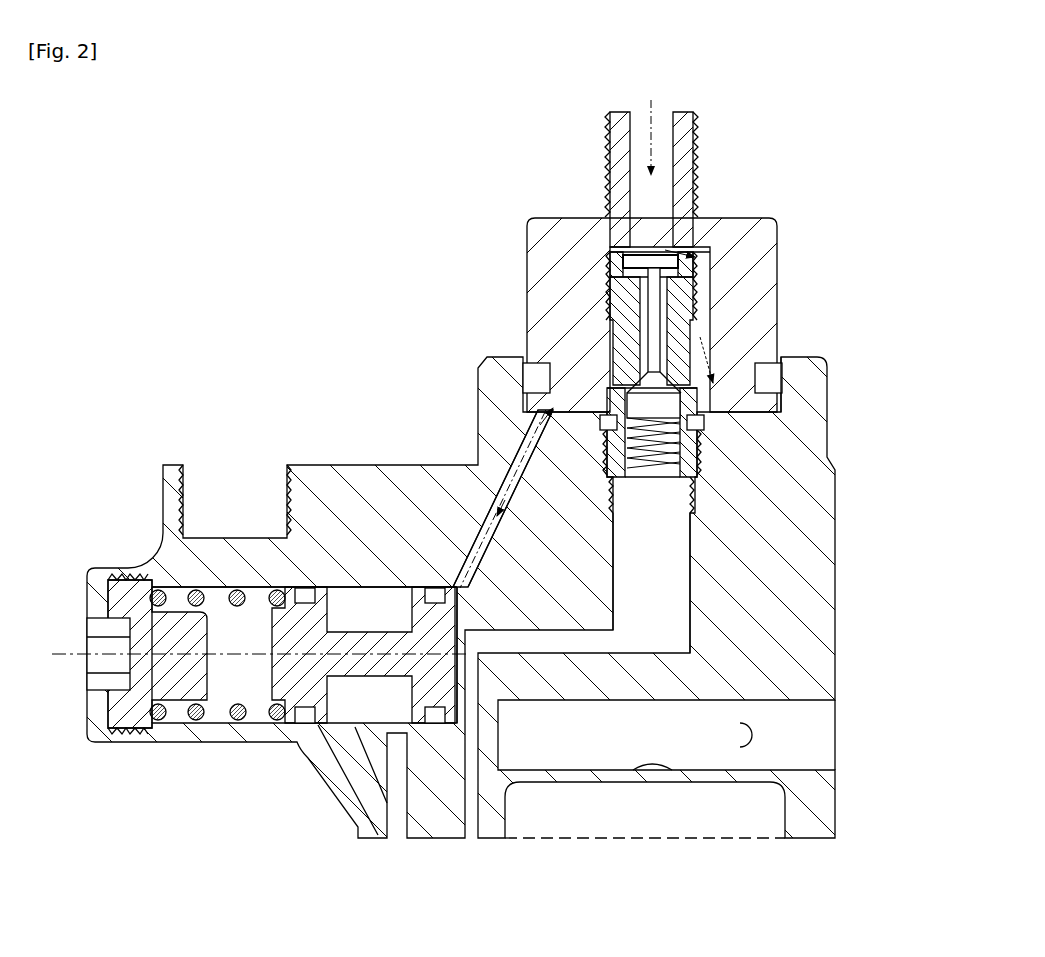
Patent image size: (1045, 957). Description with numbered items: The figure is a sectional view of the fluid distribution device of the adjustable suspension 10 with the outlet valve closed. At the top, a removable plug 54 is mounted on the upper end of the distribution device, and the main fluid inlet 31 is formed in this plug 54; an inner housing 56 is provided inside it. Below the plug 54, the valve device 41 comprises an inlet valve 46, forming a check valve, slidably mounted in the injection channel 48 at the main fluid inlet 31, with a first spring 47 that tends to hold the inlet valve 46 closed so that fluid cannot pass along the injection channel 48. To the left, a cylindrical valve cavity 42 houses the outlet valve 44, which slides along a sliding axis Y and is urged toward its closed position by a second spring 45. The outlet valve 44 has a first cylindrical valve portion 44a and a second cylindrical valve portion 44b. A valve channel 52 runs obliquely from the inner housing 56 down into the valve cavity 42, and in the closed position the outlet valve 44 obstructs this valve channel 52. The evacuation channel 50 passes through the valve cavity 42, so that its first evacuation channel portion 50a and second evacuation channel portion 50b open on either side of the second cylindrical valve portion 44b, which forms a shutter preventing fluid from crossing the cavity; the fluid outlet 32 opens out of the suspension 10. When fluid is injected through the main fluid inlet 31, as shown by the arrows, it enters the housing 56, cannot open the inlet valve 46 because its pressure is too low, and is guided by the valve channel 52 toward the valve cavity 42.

The adjustable suspension 10 is at (496, 494).
The main fluid inlet 31 is at (685, 166).
The fluid outlet 32 is at (258, 488).
The valve device 41 is at (430, 447).
The cylindrical valve cavity 42 is at (225, 675).
The outlet valve 44 is at (362, 622).
The first cylindrical valve portion 44a is at (411, 588).
The second cylindrical valve portion 44b is at (325, 590).
The second spring 45 is at (178, 725).
The inlet valve 46 is at (655, 408).
The first spring 47 is at (653, 455).
The injection channel 48 is at (647, 597).
The evacuation channel 50 is at (398, 793).
The first evacuation channel portion 50a is at (362, 773).
The second evacuation channel portion 50b is at (272, 585).
The valve channel 52 is at (487, 525).
The removable plug 54 is at (762, 243).
The inner housing 56 is at (587, 397).
The sliding axis Y is at (60, 654).